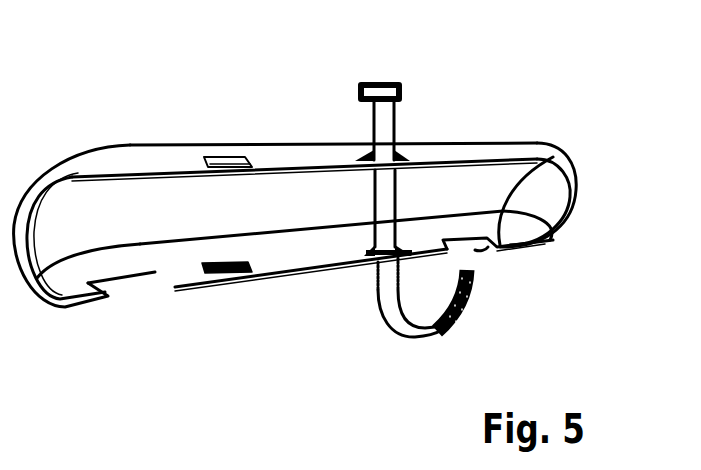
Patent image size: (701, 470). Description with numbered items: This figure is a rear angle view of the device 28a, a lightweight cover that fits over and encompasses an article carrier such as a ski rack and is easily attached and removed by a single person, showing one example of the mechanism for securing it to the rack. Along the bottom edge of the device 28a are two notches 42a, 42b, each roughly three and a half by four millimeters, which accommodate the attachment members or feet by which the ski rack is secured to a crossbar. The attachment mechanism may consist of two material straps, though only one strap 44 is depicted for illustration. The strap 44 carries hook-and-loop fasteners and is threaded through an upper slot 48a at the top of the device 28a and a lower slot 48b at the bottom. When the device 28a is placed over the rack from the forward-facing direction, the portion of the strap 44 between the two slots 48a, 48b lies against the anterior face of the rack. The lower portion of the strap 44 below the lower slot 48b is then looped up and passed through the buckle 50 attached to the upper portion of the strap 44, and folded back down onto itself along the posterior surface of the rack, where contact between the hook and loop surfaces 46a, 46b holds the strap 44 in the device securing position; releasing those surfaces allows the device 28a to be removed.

The device 28a is at (218, 122).
The notch 42a is at (135, 295).
The notch 42b is at (545, 158).
The strap 44 is at (415, 199).
The hooks and loops surface 46a is at (436, 335).
The hooks and loops surface 46b is at (468, 302).
The upper slot 48a is at (366, 156).
The lower slot 48b is at (403, 247).
The buckle 50 is at (380, 88).